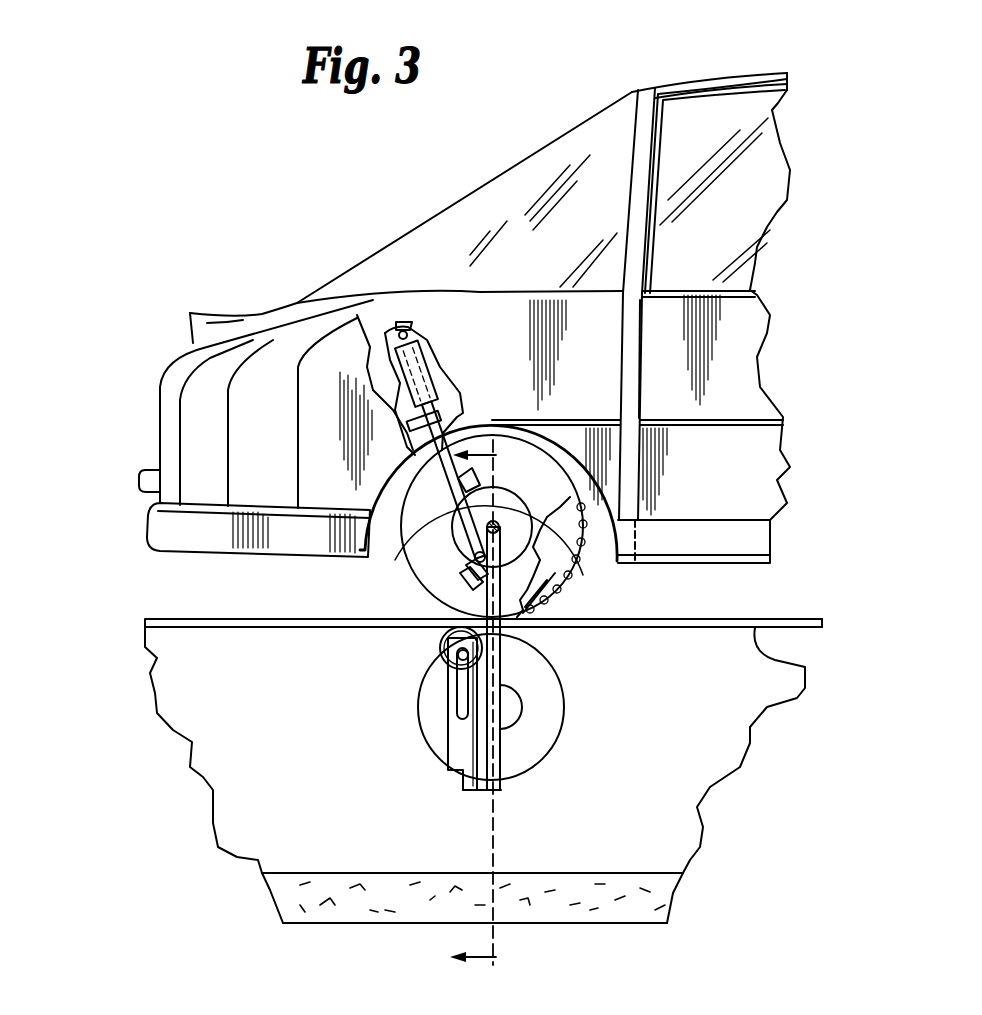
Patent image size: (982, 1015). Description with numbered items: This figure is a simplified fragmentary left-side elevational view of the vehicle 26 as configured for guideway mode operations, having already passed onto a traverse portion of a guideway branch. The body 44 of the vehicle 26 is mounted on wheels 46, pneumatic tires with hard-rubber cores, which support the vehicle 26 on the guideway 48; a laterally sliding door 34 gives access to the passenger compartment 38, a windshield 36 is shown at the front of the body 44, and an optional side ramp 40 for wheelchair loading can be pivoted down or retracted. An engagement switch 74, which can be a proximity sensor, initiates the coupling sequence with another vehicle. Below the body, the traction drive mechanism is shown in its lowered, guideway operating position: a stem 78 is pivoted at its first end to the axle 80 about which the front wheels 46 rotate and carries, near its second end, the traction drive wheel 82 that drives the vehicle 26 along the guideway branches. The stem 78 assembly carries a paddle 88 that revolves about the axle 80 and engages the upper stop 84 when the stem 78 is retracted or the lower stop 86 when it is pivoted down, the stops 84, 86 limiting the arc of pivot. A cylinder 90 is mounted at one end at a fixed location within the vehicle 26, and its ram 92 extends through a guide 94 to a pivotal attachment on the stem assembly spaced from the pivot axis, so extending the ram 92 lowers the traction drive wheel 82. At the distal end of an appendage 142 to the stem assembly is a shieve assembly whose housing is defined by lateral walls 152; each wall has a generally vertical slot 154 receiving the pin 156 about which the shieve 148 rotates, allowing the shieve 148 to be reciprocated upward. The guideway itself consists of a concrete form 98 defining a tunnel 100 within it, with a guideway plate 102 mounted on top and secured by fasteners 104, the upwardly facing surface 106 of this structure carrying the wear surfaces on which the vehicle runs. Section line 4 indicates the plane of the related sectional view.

The vehicle 26 is at (362, 233).
The laterally sliding door 34 is at (760, 396).
The windshield 36 is at (556, 128).
The passenger compartment 38 is at (672, 110).
The side ramp 40 is at (733, 564).
The body 44 is at (292, 300).
The wheel 46 is at (560, 577).
The guideway 48 is at (220, 634).
The engagement switch 74 is at (139, 490).
The stem 78 is at (503, 630).
The axle 80 is at (565, 530).
The traction drive wheel 82 is at (566, 697).
The upper stop 84 is at (425, 505).
The lower stop 86 is at (520, 562).
The paddle 88 is at (470, 567).
The cylinder 90 is at (370, 335).
The ram 92 is at (470, 545).
The guide 94 is at (460, 408).
The concrete form 98 is at (640, 873).
The tunnel 100 is at (255, 800).
The guideway plate 102 is at (805, 667).
The fastener 104 is at (793, 628).
The upwardly facing surface 106 is at (185, 617).
The appendage 142 is at (448, 756).
The shieve 148 is at (440, 638).
The lateral wall 152 is at (460, 740).
The slot 154 is at (458, 703).
The pin 156 is at (459, 655).
The section line 4- 4 is at (483, 706).